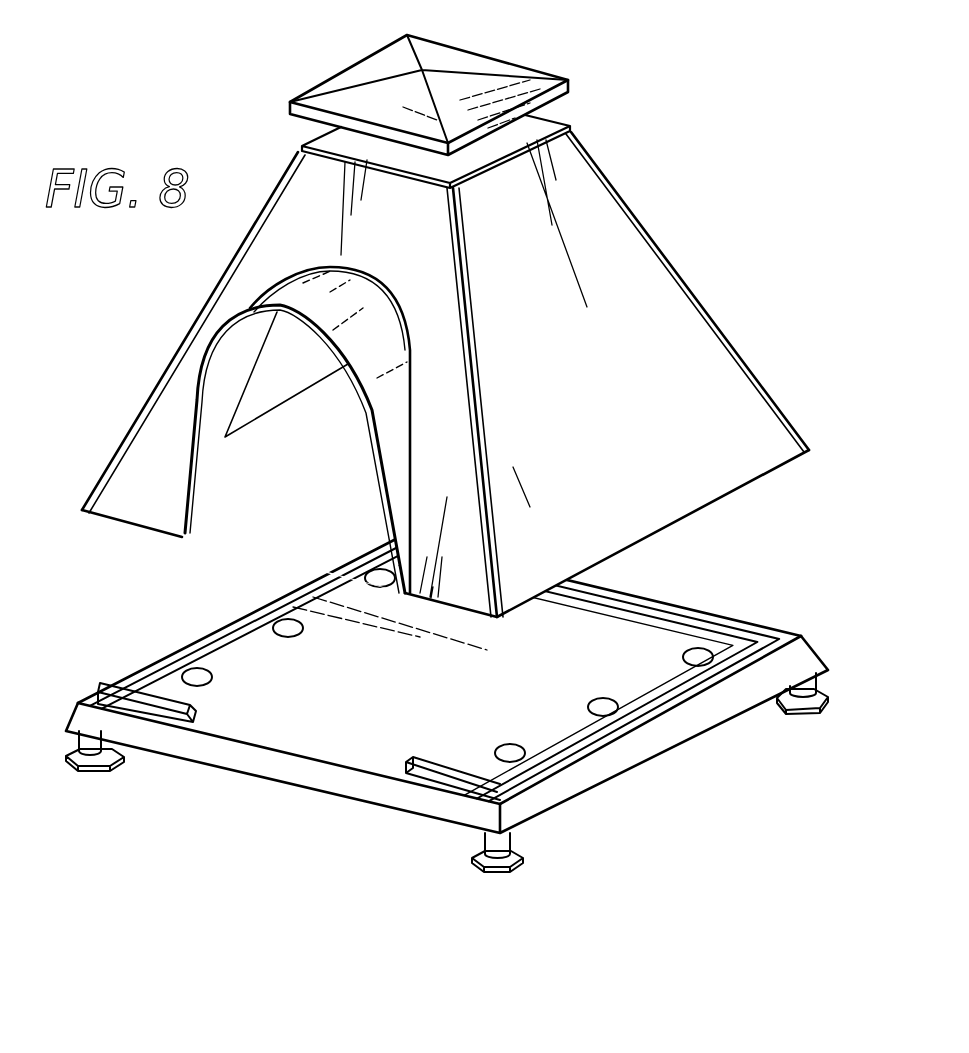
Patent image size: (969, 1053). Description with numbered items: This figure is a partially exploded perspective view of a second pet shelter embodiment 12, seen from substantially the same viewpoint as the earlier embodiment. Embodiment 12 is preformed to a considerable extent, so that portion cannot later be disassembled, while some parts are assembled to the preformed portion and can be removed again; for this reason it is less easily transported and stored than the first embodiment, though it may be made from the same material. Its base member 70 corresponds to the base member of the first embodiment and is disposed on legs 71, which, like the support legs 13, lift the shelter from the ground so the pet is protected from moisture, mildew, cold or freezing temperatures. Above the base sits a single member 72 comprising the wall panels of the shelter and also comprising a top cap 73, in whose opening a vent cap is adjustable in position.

The second preferred embodiment 12 is at (676, 208).
The support legs 13 is at (74, 741).
The base member 70 is at (698, 655).
The legs 71 is at (98, 748).
The single member 72 is at (718, 355).
The top cap 73 is at (540, 121).